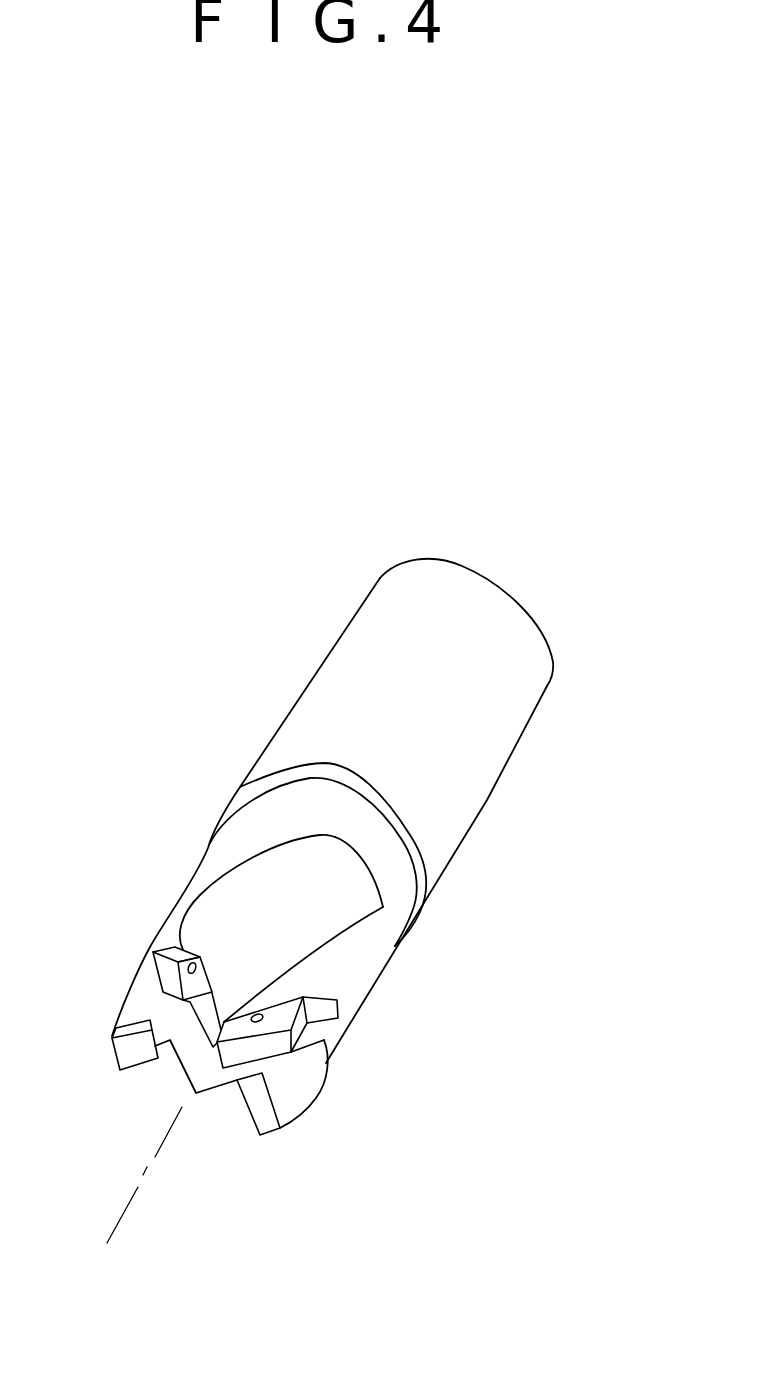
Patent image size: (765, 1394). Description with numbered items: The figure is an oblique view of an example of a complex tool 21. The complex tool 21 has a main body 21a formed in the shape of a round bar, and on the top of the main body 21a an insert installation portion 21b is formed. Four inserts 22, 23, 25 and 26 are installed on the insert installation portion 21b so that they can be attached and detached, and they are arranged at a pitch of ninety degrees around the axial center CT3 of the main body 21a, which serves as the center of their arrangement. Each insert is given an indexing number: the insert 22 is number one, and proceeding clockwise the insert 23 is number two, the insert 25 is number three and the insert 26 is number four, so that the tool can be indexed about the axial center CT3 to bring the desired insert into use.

The complex tool 21 is at (288, 657).
The main body 21a is at (480, 773).
The insert installation portion 21b is at (353, 990).
The insert 22 is at (265, 1047).
The insert 23 is at (268, 1125).
The insert 25 is at (125, 1052).
The insert 26 is at (158, 950).
The axial center CT3 is at (115, 1225).